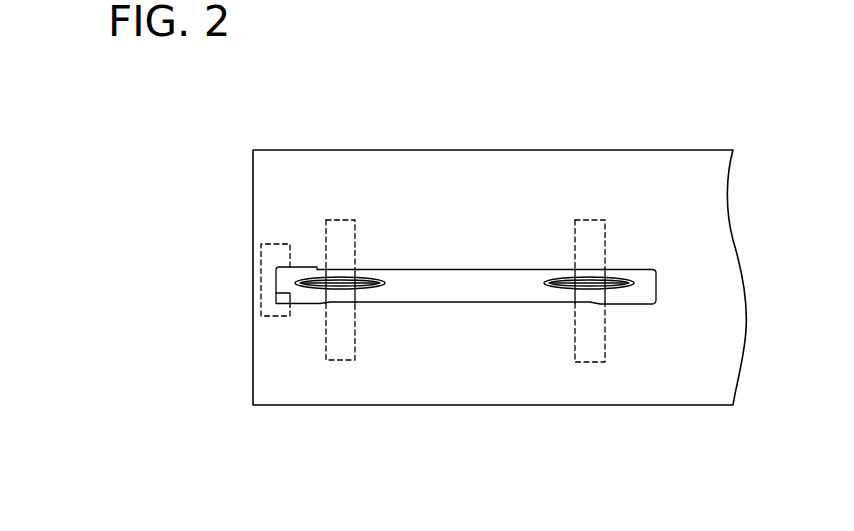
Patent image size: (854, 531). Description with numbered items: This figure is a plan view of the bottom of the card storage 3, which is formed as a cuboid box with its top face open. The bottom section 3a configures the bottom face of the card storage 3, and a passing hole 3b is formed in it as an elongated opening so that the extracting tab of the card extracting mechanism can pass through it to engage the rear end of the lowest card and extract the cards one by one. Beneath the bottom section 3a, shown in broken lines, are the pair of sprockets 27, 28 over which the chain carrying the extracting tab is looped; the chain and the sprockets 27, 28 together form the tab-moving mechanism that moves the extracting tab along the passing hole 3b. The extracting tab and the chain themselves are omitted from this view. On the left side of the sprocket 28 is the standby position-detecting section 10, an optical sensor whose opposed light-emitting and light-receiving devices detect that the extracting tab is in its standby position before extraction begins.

The card storage 3 is at (489, 150).
The bottom section 3a is at (681, 207).
The passing hole 3b is at (455, 268).
The standby position-detecting section 10 is at (277, 243).
The sprocket 27 is at (560, 290).
The sprocket 28 is at (368, 290).